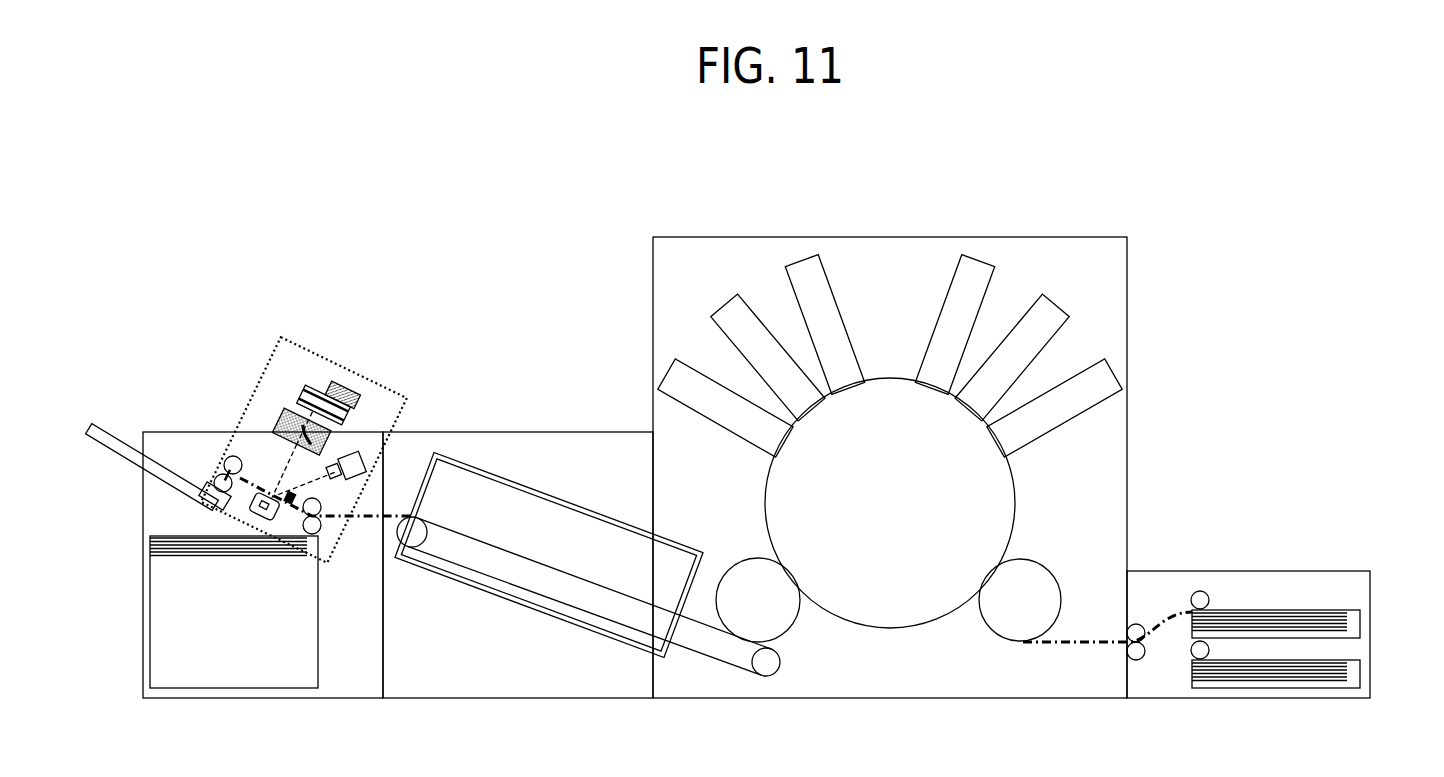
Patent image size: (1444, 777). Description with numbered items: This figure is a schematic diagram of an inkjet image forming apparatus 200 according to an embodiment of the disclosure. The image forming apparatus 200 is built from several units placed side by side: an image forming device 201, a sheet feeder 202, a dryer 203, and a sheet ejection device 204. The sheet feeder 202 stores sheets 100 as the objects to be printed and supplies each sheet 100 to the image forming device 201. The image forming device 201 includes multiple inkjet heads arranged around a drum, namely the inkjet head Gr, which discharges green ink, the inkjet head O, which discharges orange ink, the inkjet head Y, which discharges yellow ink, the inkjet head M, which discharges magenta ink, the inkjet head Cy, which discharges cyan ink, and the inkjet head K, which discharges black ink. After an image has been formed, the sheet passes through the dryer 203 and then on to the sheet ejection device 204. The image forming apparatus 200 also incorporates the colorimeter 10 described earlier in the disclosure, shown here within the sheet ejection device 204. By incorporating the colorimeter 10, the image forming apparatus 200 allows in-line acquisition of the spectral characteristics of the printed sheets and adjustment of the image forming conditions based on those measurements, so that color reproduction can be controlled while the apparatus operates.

The image forming apparatus 200 is at (178, 199).
The image forming device 201 is at (897, 237).
The sheet feeder 202 is at (1245, 571).
The dryer 203 is at (525, 432).
The sheet ejection device 204 is at (183, 432).
The colorimeter 10 is at (386, 372).
The sheet 100 is at (1338, 622).
The inkjet head Y is at (786, 290).
The inkjet head M is at (994, 290).
The inkjet head O is at (746, 362).
The inkjet head Cy is at (1042, 355).
The inkjet head Gr is at (715, 416).
The inkjet head K is at (1067, 417).